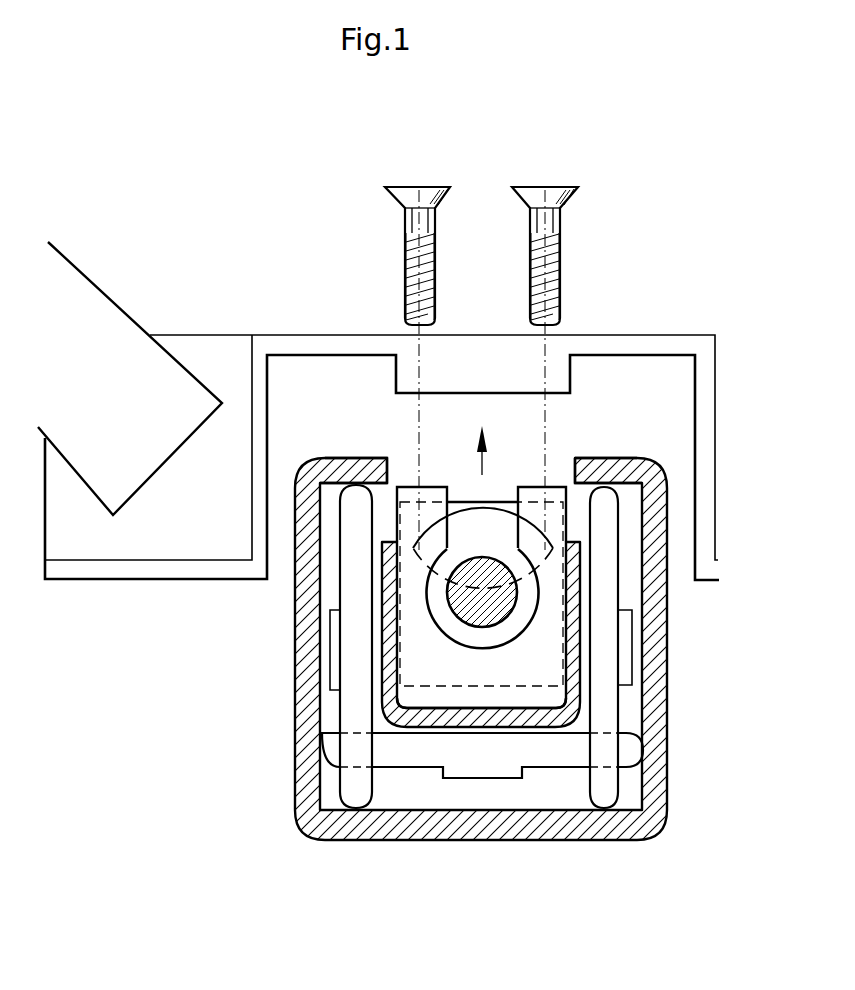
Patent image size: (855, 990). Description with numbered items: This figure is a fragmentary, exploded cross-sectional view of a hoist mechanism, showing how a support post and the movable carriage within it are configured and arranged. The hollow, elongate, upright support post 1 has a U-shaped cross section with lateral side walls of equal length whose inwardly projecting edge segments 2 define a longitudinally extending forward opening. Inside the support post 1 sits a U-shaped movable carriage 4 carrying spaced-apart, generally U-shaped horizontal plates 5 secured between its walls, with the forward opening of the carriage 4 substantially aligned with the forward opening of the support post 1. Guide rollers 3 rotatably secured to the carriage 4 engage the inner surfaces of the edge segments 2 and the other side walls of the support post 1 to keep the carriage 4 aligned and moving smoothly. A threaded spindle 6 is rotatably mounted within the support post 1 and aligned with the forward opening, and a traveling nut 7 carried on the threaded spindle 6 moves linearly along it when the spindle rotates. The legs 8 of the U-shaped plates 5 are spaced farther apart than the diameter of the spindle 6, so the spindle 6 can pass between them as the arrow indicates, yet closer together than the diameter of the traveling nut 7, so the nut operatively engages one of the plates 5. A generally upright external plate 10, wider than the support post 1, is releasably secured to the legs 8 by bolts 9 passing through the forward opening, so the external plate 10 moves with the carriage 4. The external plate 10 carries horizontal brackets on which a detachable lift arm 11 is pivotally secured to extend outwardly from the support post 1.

The support post 1 is at (305, 733).
The edge segments 2 is at (365, 465).
The guide rollers 3 is at (347, 755).
The movable carriage 4 is at (412, 718).
The horizontal plates 5 is at (435, 698).
The threaded spindle 6 is at (471, 567).
The traveling nut 7 is at (503, 633).
The legs 8 is at (431, 492).
The bolts 9 is at (425, 196).
The external plate 10 is at (563, 343).
The lift arm 11 is at (96, 300).